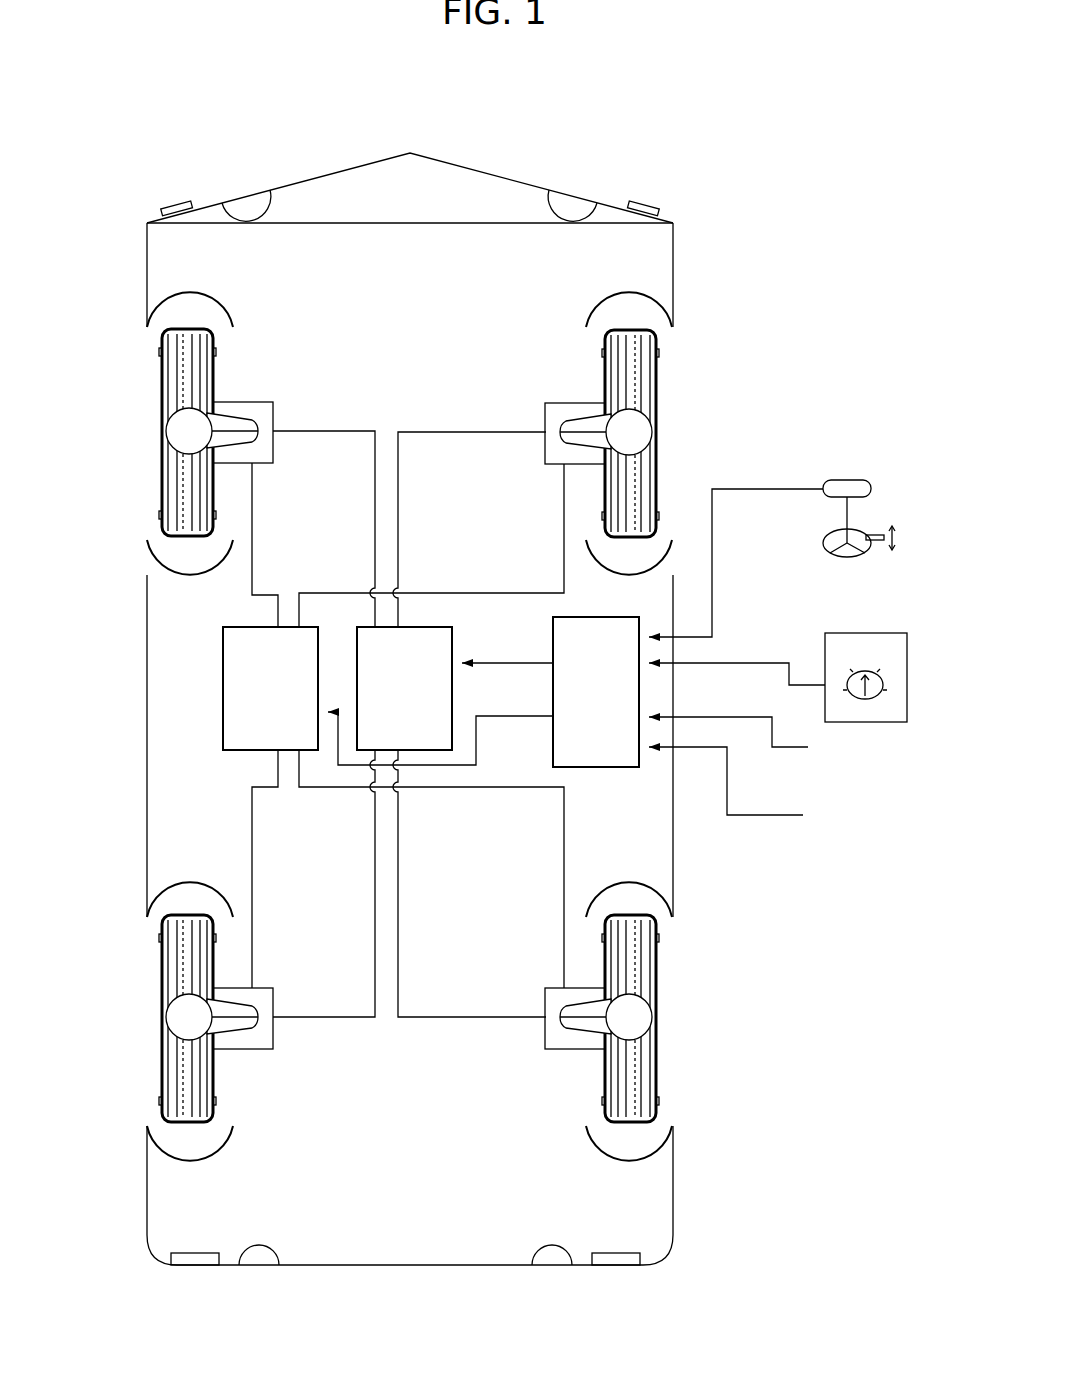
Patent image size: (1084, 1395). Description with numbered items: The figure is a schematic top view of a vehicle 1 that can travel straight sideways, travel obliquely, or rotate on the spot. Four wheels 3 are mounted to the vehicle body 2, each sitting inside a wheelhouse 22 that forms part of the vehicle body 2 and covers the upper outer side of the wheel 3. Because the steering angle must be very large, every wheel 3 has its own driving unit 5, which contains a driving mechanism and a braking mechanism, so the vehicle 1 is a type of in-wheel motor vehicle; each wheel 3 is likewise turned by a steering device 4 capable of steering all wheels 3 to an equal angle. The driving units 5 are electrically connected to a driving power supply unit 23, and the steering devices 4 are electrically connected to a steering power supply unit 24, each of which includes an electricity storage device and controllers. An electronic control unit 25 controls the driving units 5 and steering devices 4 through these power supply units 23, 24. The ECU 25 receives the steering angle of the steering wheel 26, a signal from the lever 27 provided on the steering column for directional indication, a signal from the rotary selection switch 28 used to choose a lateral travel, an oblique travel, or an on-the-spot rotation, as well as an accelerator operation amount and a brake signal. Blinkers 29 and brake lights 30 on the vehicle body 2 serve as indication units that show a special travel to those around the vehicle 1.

The vehicle 1 is at (636, 116).
The vehicle body 2 is at (146, 686).
The wheel 3 is at (160, 492).
The steering device 4 is at (182, 432).
The driving unit 5 is at (265, 402).
The wheelhouse 22 is at (183, 297).
The driving power supply unit 23 is at (223, 690).
The steering power supply unit 24 is at (455, 640).
The electronic control unit (ECU) 25 is at (597, 768).
The steering wheel 26 is at (826, 546).
The lever 27 is at (884, 548).
The selection switch 28 is at (880, 697).
The blinker 29 is at (172, 205).
The brake light 30 is at (252, 1262).